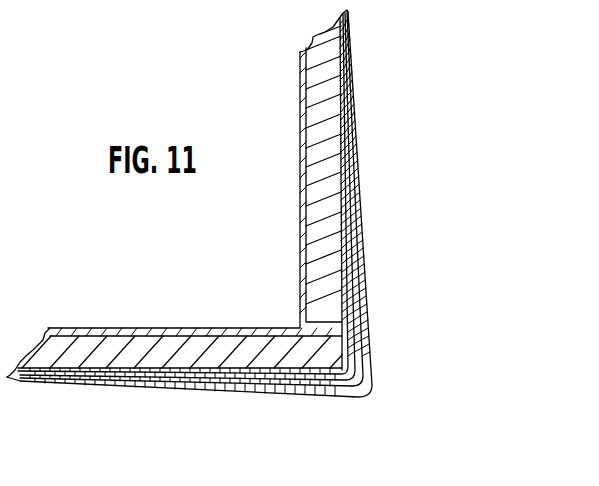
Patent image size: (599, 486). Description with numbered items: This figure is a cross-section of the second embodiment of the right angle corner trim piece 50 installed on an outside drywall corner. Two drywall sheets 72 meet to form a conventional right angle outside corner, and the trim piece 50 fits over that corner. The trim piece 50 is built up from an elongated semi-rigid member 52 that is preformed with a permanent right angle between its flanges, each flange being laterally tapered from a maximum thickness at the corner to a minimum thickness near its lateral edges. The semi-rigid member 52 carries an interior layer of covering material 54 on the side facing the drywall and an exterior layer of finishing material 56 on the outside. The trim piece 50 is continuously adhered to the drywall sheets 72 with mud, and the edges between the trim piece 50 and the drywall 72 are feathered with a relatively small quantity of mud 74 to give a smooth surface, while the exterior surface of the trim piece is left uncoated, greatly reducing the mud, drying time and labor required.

The drywall sheets 72 is at (309, 151).
The mud 74 is at (352, 76).
The right angle corner trim piece 50 is at (360, 195).
The elongated semi-rigid member 52 is at (364, 289).
The exterior layer of finishing material 56 is at (368, 338).
The interior layer of covering material 54 is at (305, 385).